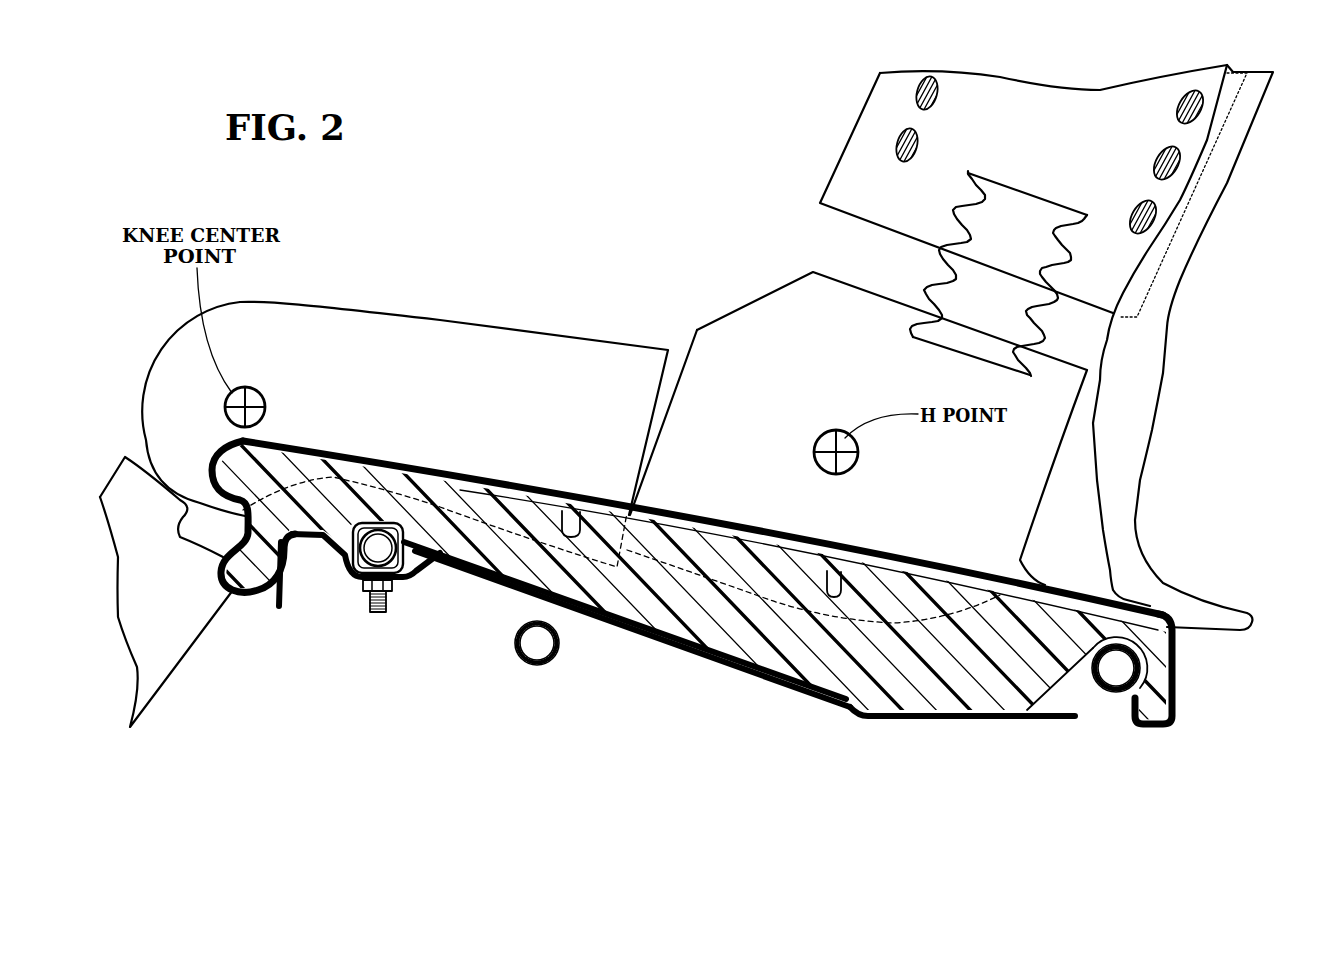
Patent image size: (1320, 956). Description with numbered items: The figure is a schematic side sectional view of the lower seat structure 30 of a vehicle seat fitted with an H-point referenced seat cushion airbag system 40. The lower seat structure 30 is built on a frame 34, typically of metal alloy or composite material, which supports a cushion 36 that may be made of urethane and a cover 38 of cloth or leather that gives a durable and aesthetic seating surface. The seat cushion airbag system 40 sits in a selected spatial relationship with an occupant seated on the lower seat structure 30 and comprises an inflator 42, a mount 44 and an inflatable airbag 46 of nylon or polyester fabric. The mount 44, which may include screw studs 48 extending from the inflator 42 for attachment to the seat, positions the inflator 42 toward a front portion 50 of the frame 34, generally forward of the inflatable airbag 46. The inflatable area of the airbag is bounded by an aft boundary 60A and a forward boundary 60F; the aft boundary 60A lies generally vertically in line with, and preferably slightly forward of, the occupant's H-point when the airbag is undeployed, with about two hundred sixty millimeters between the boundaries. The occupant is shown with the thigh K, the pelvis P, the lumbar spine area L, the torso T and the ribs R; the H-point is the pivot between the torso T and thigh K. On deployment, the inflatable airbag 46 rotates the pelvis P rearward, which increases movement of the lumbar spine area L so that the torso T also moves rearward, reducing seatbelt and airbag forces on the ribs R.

The lower seat structure 30 is at (660, 532).
The frame 34 is at (284, 608).
The cushion 36 is at (237, 595).
The cover 38 is at (346, 445).
The seat cushion airbag system 40 is at (652, 610).
The inflator 42 is at (340, 556).
The mount 44 is at (393, 605).
The inflatable airbag 46 is at (757, 640).
The screw studs 48 is at (377, 613).
The front portion 50 is at (287, 572).
The aft boundary 60A is at (818, 690).
The forward boundary 60F is at (465, 555).
The thigh K is at (430, 358).
The pelvis P is at (803, 355).
The torso T is at (853, 170).
The lumbar spine area L is at (940, 280).
The ribs R is at (912, 103).